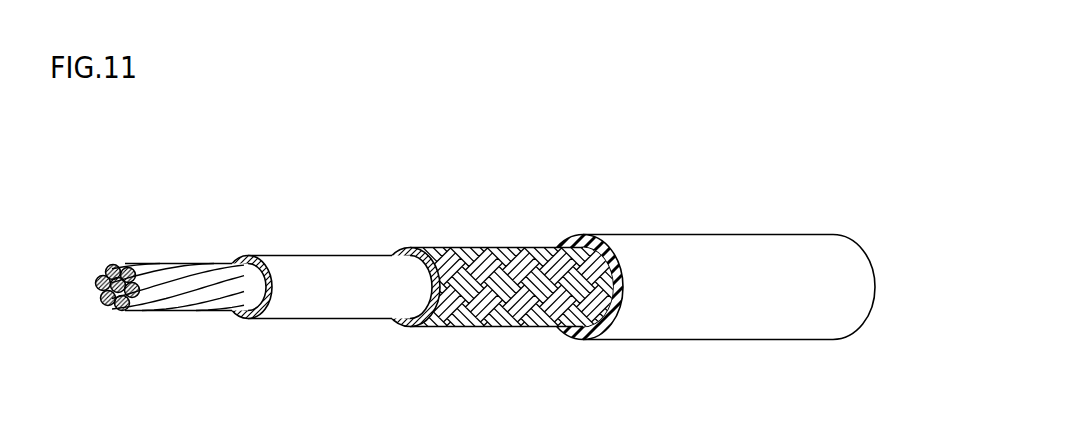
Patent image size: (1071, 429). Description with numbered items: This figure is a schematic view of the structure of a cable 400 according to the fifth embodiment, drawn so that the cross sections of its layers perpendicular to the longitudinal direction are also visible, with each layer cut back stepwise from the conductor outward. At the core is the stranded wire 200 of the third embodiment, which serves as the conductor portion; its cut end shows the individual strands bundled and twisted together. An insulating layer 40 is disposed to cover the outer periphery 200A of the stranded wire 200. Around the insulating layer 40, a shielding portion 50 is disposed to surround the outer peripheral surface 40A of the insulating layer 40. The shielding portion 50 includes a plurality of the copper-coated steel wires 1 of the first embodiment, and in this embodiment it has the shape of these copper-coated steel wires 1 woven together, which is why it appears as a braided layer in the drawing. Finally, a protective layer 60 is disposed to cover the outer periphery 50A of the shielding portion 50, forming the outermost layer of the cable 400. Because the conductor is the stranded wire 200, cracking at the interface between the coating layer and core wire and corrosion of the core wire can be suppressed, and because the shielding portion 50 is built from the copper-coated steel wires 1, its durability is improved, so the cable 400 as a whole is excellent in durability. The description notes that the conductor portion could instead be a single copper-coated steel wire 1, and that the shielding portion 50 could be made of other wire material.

The cable 400 is at (693, 160).
The protective layer 60 is at (713, 329).
The shielding portion 50 is at (503, 352).
The outer periphery of the shielding portion 50A is at (523, 247).
The insulating layer 40 is at (238, 262).
The outer peripheral surface of the insulating layer 40A is at (331, 307).
The stranded wire 200 is at (175, 333).
The outer periphery of the stranded wire 200A is at (177, 267).
The copper-coated steel wire 1 is at (105, 267).